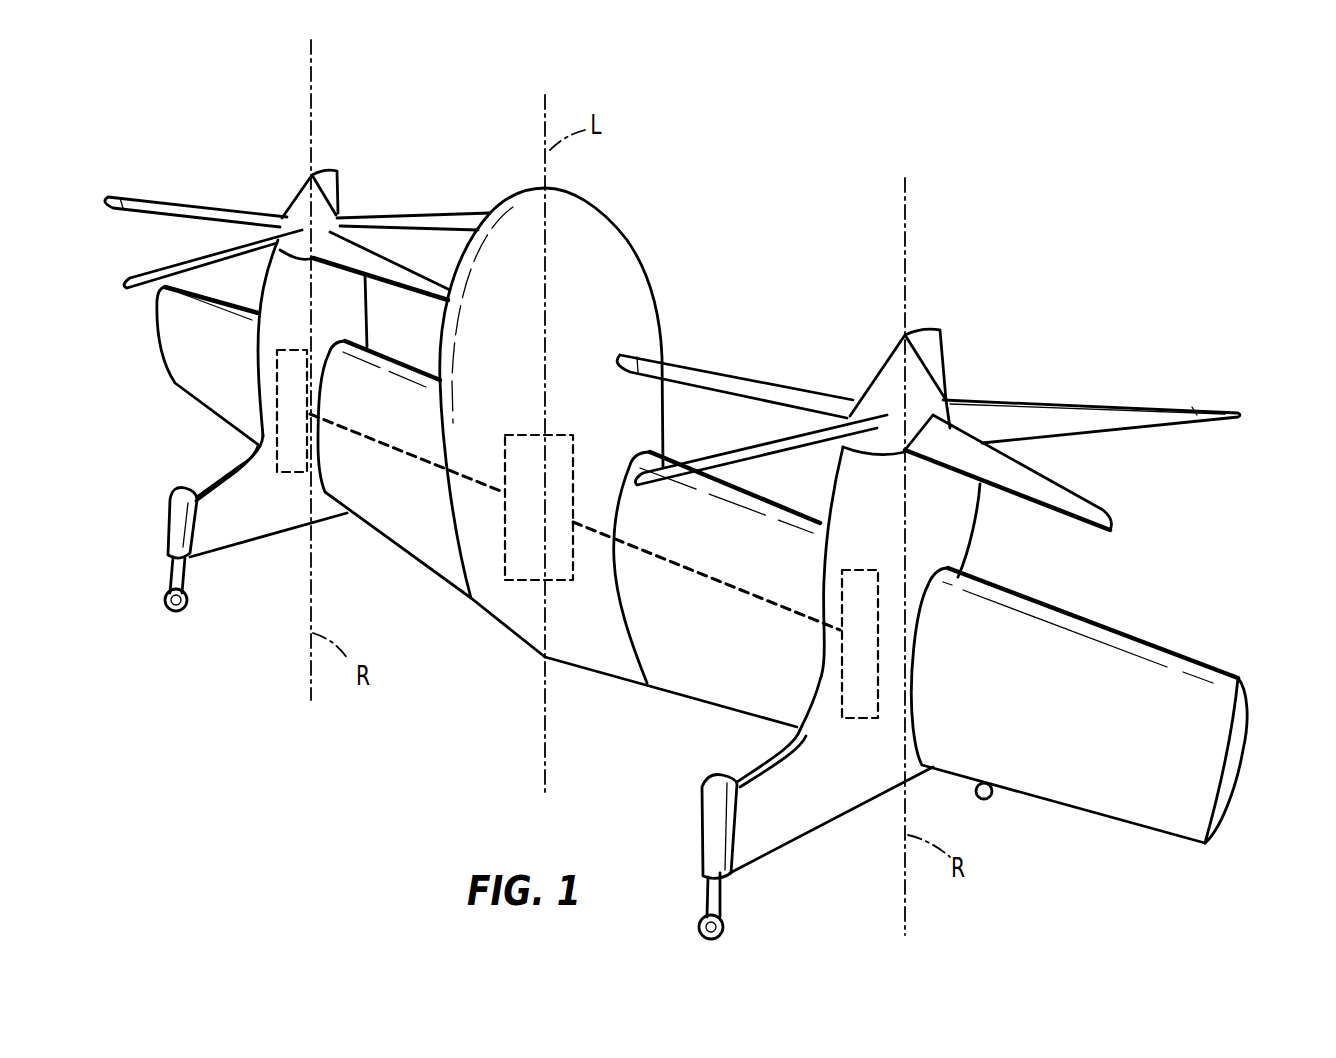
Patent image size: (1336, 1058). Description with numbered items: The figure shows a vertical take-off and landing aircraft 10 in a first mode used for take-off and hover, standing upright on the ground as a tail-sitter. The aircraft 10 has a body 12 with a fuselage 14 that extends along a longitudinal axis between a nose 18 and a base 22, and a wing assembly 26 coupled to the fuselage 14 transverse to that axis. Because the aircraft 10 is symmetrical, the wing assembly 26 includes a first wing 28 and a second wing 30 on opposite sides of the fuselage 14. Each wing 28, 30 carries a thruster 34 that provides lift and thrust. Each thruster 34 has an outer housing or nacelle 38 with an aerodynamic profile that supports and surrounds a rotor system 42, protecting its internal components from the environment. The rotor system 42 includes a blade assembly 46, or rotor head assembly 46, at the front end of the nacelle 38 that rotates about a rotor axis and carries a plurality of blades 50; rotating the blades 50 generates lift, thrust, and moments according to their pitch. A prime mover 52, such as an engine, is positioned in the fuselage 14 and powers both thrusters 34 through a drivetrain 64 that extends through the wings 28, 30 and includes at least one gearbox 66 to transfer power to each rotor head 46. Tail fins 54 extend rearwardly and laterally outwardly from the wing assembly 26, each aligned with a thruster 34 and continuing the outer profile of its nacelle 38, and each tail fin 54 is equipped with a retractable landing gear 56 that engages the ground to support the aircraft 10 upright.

The aircraft 10 is at (833, 135).
The body 12 is at (645, 423).
The fuselage 14 is at (573, 356).
The nose 18 is at (527, 202).
The base 22 is at (523, 615).
The wing assembly 26 is at (710, 668).
The first wing 28 is at (177, 320).
The second wing 30 is at (1230, 735).
The thruster 34 is at (330, 307).
The nacelle 38 is at (285, 330).
The rotor system 42 is at (683, 320).
The blade assembly 46 is at (302, 215).
The blade 50 is at (1205, 410).
The prime mover 52 is at (503, 503).
The tail fin 54 is at (252, 525).
The retractable landing gear 56 is at (162, 600).
The drivetrain 64 is at (427, 462).
The gearbox 66 is at (257, 440).